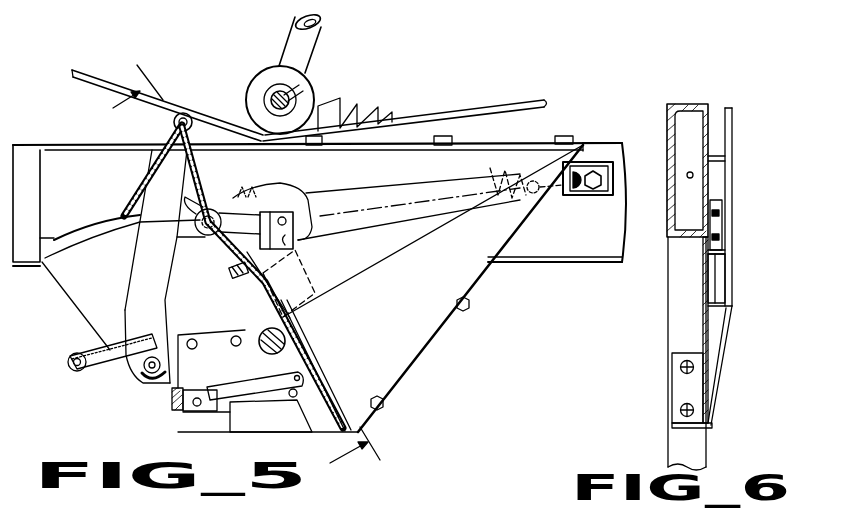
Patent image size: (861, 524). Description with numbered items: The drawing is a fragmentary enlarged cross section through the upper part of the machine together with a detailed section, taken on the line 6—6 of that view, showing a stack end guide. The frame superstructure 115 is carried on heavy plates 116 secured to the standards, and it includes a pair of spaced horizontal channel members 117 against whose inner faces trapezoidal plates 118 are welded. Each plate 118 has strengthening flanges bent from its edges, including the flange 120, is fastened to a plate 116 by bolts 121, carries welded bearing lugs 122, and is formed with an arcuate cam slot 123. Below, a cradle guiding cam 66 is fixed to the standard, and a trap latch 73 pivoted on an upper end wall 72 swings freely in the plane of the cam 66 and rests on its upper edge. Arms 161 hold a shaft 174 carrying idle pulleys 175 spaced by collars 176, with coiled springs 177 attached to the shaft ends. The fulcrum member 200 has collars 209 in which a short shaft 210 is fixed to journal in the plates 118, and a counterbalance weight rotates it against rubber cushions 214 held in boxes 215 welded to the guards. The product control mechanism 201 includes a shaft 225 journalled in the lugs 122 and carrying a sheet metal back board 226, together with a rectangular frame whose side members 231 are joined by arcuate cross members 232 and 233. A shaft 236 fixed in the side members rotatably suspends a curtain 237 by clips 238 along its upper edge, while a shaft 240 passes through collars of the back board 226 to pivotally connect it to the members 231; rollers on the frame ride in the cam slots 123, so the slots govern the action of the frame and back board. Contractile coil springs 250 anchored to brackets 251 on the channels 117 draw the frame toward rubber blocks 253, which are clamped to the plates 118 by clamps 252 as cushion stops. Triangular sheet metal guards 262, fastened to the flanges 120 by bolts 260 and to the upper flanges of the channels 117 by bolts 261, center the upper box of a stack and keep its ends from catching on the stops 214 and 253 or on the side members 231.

In FIG. 5, the section line 6— 6 is at (252, 264).
In FIG. 5, the cradle guiding cam 66 is at (267, 413).
In FIG. 5, the upper end wall 72 is at (210, 387).
In FIG. 5, the trap latch 73 is at (263, 390).
In FIG. 5, the frame superstructure 115 is at (552, 249).
In FIG. 5, the heavy plate 116 is at (217, 381).
In FIG. 5, the channel member 117 is at (603, 246).
In FIG. 6, the channel member 117 is at (693, 70).
In FIG. 5, the trapezoidal plate 118 is at (83, 296).
In FIG. 6, the trapezoidal plate 118 is at (703, 323).
In FIG. 6, the flange 120 is at (683, 413).
In FIG. 5, the bolt 121 is at (199, 338).
In FIG. 5, the bearing lug 122 is at (90, 340).
In FIG. 5, the arcuate cam slot 123 is at (86, 243).
In FIG. 6, the arcuate cam slot 123 is at (704, 188).
In FIG. 5, the arm 161 is at (303, 40).
In FIG. 5, the shaft 174 is at (298, 93).
In FIG. 5, the idle pulley 175 is at (255, 80).
In FIG. 5, the collar 176 is at (312, 77).
In FIG. 5, the coiled spring 177 is at (357, 110).
In FIG. 5, the fulcrum member 200 is at (280, 283).
In FIG. 5, the product control mechanism 201 is at (160, 286).
In FIG. 5, the collar 209 is at (298, 345).
In FIG. 5, the short shaft 210 is at (300, 367).
In FIG. 5, the rubber cushion 214 is at (294, 323).
In FIG. 6, the rubber cushion 214 is at (720, 279).
In FIG. 5, the box 215 is at (326, 301).
In FIG. 6, the box 215 is at (715, 318).
In FIG. 5, the shaft 225 is at (70, 366).
In FIG. 5, the back board 226 is at (117, 363).
In FIG. 5, the side member 231 is at (147, 295).
In FIG. 5, the arcuate cross member 232 is at (218, 107).
In FIG. 5, the arcuate cross member 233 is at (160, 383).
In FIG. 5, the shaft 236 is at (173, 125).
In FIG. 5, the curtain 237 is at (138, 190).
In FIG. 5, the clip 238 is at (162, 144).
In FIG. 5, the shaft 240 is at (151, 380).
In FIG. 5, the contractile coil spring 250 is at (362, 185).
In FIG. 5, the bracket 251 is at (597, 193).
In FIG. 5, the clamp 252 is at (307, 238).
In FIG. 6, the clamp 252 is at (712, 230).
In FIG. 5, the rubber block 253 is at (265, 213).
In FIG. 6, the rubber block 253 is at (712, 200).
In FIG. 5, the bolt 260 is at (470, 310).
In FIG. 6, the bolt 260 is at (680, 367).
In FIG. 5, the bolt 261 is at (560, 137).
In FIG. 5, the triangular sheet metal guard 262 is at (478, 246).
In FIG. 6, the triangular sheet metal guard 262 is at (716, 364).